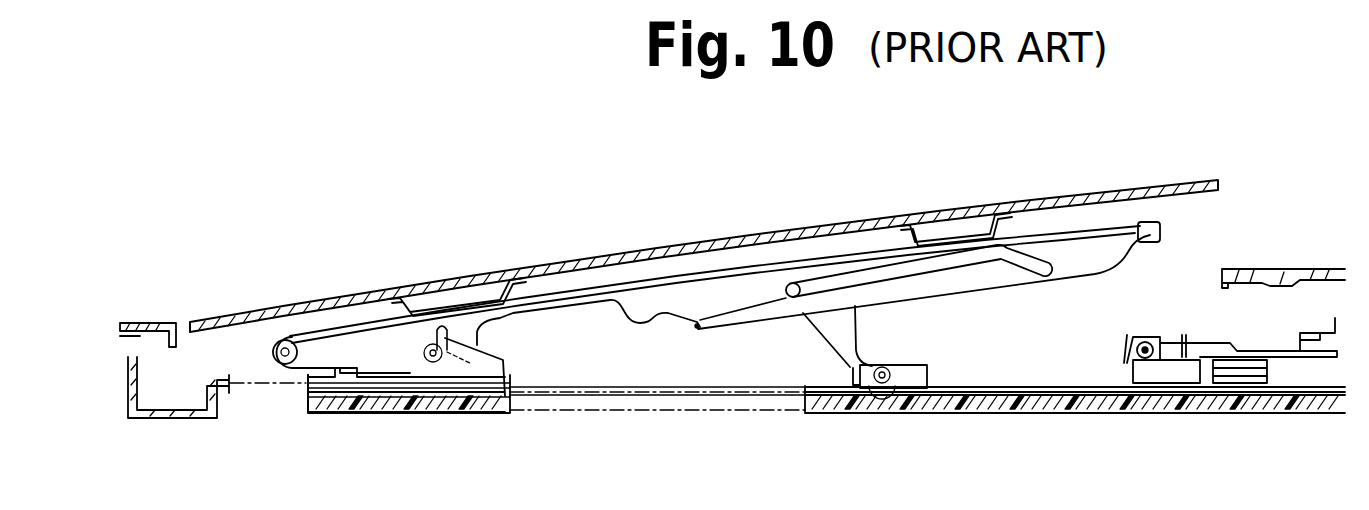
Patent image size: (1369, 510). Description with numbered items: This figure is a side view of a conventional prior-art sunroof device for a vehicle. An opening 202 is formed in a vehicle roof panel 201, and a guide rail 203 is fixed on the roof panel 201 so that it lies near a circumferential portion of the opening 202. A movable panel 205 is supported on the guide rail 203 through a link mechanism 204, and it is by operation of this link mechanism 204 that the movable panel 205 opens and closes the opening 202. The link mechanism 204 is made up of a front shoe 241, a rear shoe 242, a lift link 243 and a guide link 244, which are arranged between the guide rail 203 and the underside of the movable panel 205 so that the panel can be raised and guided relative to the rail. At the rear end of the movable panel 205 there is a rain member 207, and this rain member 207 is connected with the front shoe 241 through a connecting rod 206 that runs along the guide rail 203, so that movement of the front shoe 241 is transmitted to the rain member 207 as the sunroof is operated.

The vehicle roof panel 201 is at (153, 322).
The opening 202 is at (1218, 270).
The guide rail 203 is at (1062, 400).
The link mechanism 204 is at (688, 427).
The movable panel 205 is at (962, 208).
The connecting rod 206 is at (1130, 355).
The rain member 207 is at (1200, 387).
The front shoe 241 is at (480, 376).
The rear shoe 242 is at (925, 370).
The lift link 243 is at (832, 337).
The guide link 244 is at (685, 305).